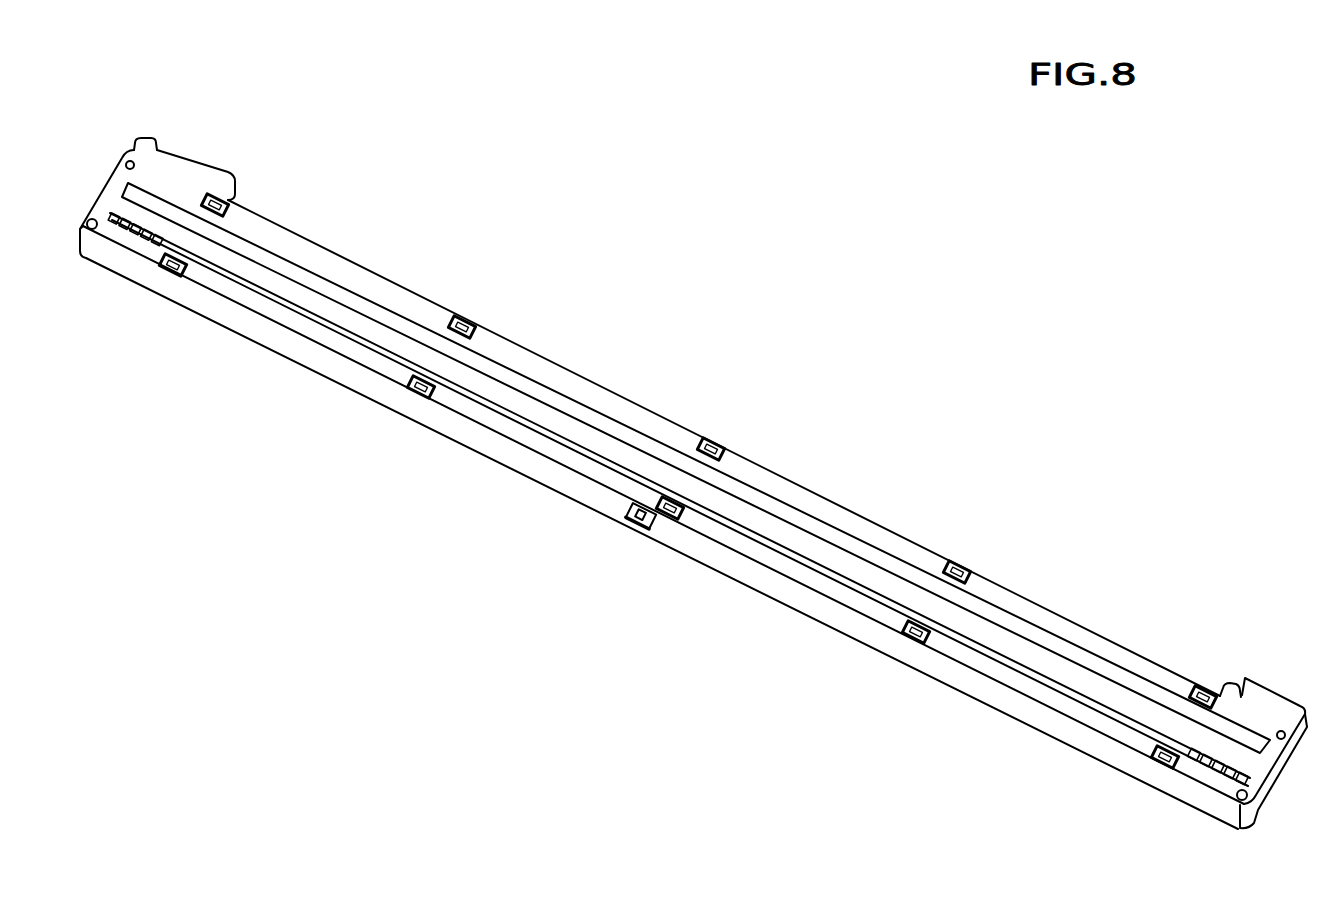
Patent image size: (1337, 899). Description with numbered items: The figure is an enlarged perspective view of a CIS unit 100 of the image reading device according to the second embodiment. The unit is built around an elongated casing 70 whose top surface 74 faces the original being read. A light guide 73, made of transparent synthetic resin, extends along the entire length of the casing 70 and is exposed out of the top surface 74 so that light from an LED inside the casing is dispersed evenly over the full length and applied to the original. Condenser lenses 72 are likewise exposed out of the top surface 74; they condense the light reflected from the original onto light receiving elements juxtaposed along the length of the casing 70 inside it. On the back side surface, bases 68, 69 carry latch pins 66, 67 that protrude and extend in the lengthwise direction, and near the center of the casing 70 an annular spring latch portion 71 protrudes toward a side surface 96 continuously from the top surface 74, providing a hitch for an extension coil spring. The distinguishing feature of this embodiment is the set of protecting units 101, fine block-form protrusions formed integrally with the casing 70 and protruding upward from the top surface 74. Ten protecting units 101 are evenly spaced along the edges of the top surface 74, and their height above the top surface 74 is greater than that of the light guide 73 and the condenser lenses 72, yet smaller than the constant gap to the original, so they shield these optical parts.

The latch pin 66 is at (1227, 688).
The latch pin 67 is at (138, 140).
The base 68 is at (1273, 700).
The base 69 is at (182, 157).
The casing 70 is at (632, 401).
The spring latch portion 71 is at (633, 512).
The condenser lens 72 is at (122, 233).
The light guide 73 is at (547, 400).
The top surface 74 is at (338, 270).
The side surface 96 is at (803, 604).
The CIS unit 100 is at (640, 227).
The protecting unit 101 is at (218, 196).